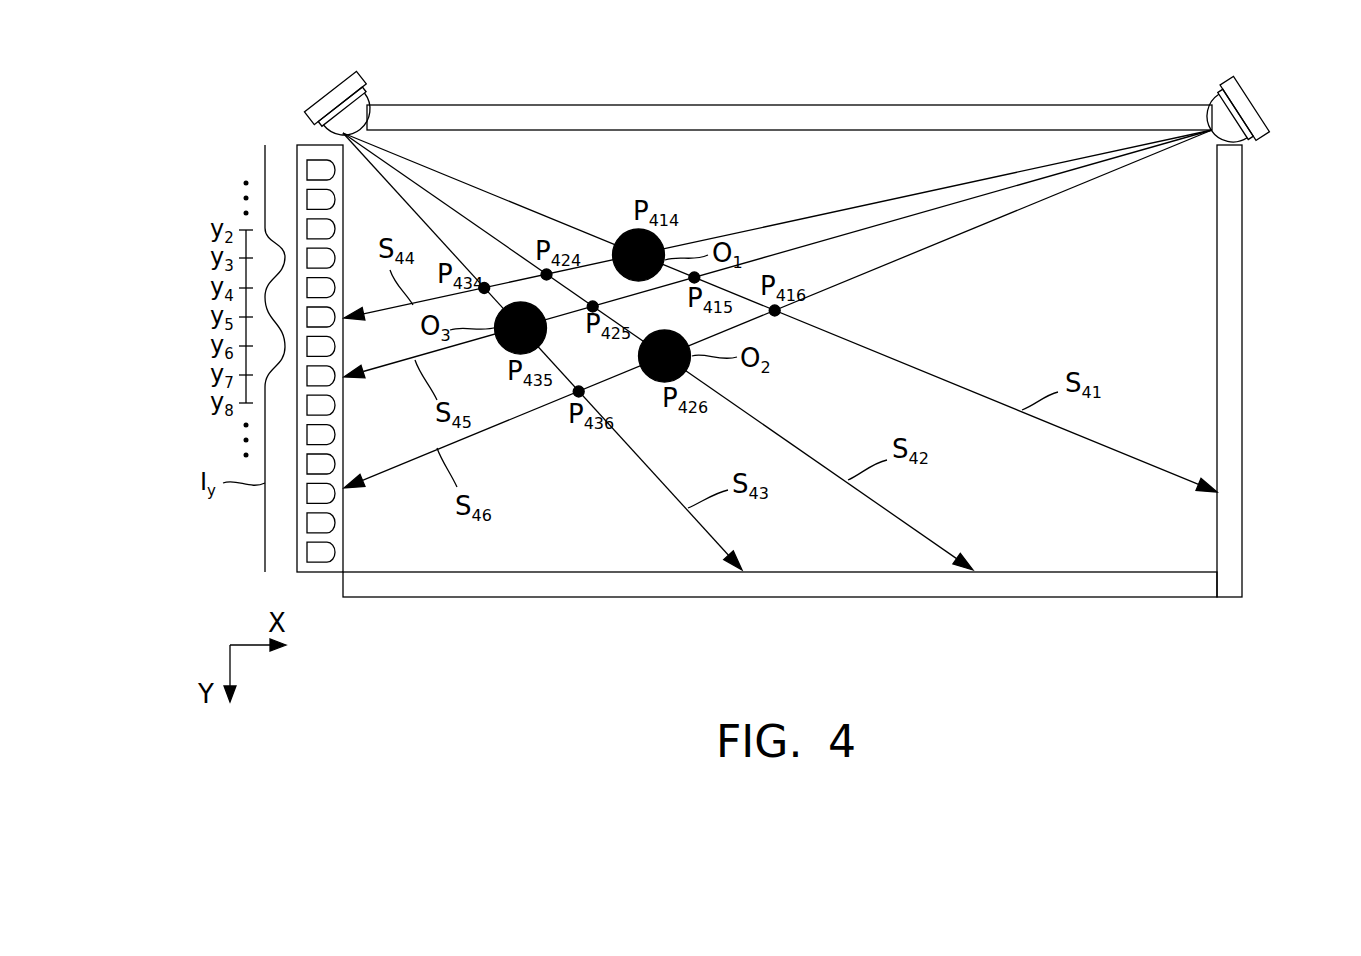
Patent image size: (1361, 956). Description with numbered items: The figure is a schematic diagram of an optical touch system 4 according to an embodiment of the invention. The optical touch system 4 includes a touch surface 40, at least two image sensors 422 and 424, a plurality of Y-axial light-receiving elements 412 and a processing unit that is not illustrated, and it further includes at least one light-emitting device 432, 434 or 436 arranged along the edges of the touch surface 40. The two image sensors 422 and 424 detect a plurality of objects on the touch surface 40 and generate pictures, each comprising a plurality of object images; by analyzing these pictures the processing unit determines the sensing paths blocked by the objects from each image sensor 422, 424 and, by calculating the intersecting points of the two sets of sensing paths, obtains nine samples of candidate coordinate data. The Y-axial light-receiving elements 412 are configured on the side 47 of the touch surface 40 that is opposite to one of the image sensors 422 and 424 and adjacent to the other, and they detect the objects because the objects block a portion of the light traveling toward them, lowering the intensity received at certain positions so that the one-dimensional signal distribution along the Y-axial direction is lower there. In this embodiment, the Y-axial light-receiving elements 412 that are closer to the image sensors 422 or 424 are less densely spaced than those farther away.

The optical touch system 4 is at (203, 63).
The touch surface 40 is at (1172, 243).
The side 47 is at (345, 548).
The Y-axial light-receiving elements 412 is at (318, 165).
The image sensor 422 is at (333, 95).
The image sensor 424 is at (1245, 112).
The light-emitting device 432 is at (811, 115).
The light-emitting device 434 is at (1232, 367).
The light-emitting device 436 is at (784, 585).